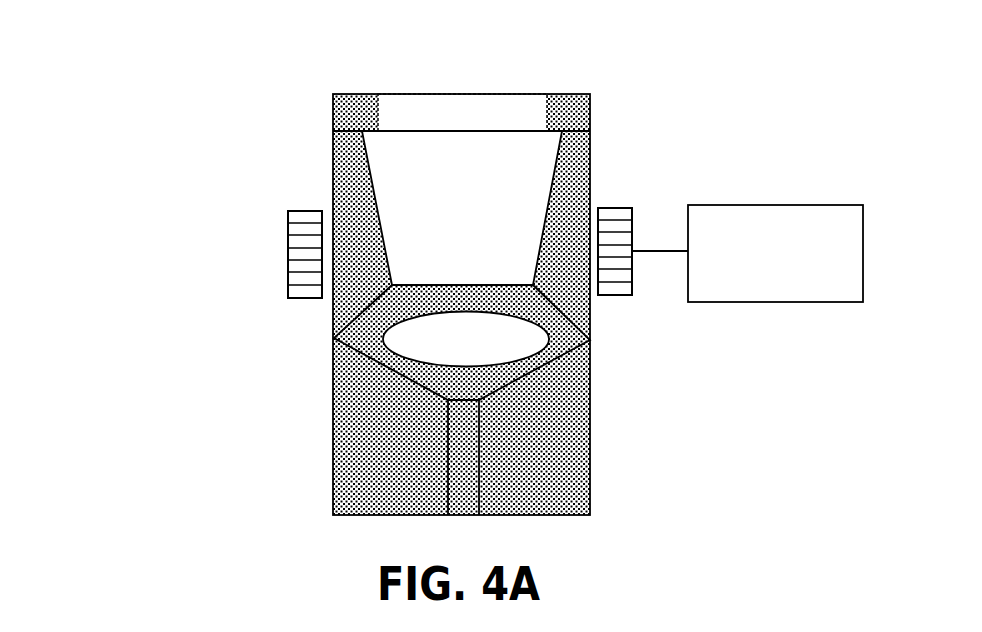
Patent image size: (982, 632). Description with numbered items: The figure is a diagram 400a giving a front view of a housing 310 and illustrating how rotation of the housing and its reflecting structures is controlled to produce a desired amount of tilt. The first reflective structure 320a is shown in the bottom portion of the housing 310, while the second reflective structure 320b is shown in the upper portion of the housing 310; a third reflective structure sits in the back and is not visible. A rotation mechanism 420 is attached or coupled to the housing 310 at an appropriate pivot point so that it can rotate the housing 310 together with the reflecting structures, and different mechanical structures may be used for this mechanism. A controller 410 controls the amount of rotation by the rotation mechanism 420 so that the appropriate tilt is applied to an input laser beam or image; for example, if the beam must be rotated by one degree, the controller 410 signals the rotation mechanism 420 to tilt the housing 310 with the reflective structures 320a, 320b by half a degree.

The diagram 400a is at (200, 75).
The housing 310 is at (590, 424).
The first reflective structure 320a is at (418, 342).
The second reflective structure 320b is at (460, 118).
The rotation mechanism 420 is at (622, 208).
The controller 410 is at (747, 253).